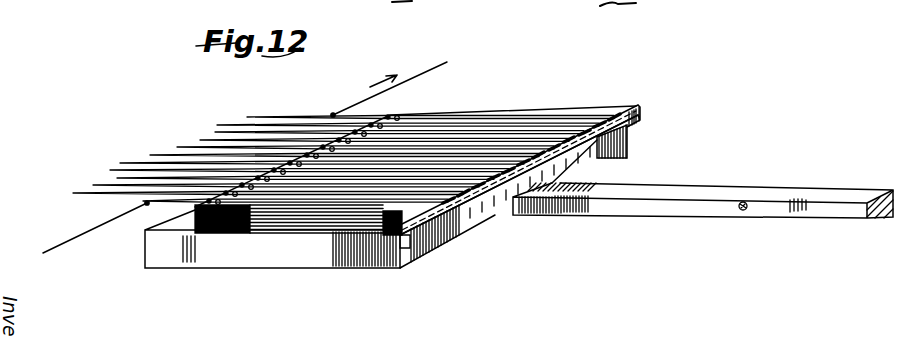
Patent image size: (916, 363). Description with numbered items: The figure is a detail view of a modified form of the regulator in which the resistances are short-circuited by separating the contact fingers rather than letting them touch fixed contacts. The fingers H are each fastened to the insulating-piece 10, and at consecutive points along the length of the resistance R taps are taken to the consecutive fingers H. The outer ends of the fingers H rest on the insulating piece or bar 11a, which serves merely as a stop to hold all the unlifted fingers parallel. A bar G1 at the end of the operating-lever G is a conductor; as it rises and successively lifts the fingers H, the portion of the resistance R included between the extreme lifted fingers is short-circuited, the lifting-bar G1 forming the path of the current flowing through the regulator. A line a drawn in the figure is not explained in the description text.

The insulating-piece 10 is at (197, 230).
The fingers H is at (438, 132).
The resistance R is at (290, 128).
The alignment line a is at (245, 157).
The lifting-bar G1 is at (628, 130).
The insulating piece or bar 11a is at (405, 226).
The operating-lever G is at (632, 191).